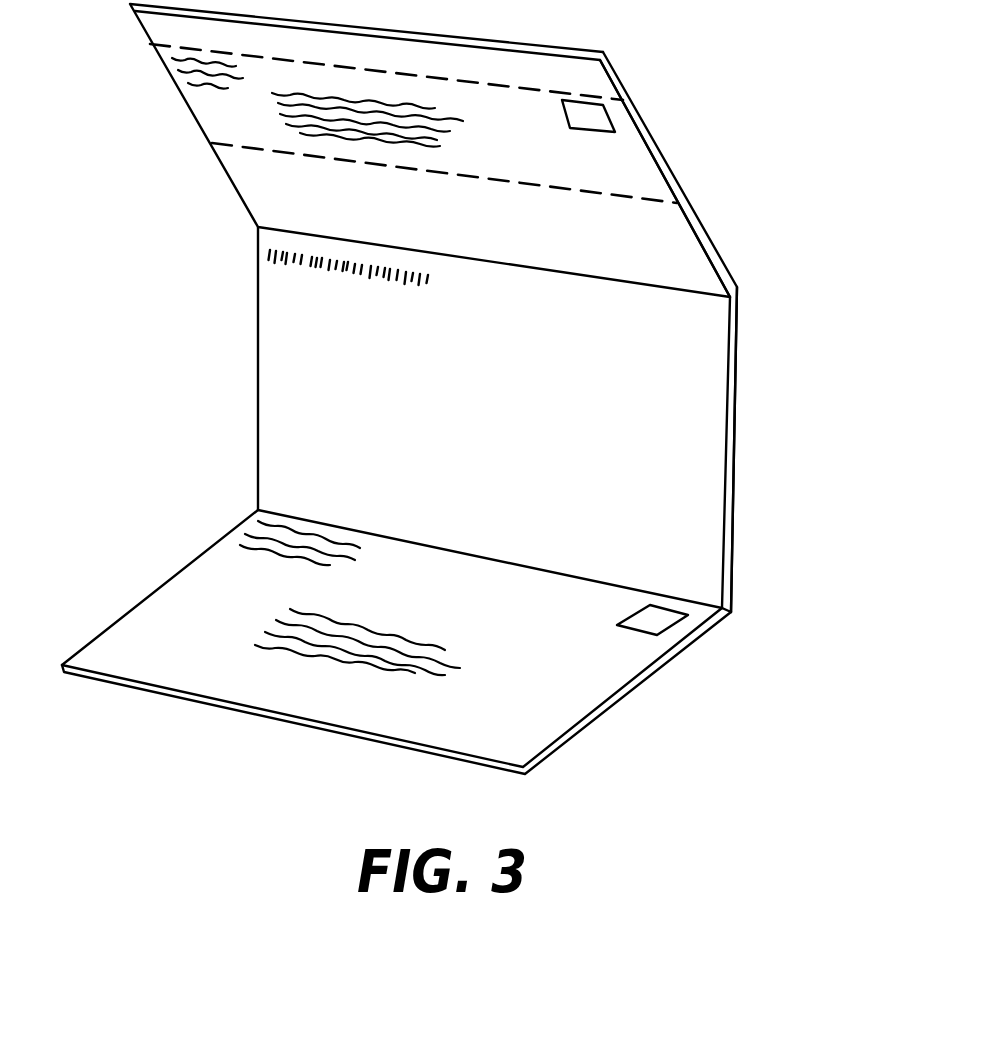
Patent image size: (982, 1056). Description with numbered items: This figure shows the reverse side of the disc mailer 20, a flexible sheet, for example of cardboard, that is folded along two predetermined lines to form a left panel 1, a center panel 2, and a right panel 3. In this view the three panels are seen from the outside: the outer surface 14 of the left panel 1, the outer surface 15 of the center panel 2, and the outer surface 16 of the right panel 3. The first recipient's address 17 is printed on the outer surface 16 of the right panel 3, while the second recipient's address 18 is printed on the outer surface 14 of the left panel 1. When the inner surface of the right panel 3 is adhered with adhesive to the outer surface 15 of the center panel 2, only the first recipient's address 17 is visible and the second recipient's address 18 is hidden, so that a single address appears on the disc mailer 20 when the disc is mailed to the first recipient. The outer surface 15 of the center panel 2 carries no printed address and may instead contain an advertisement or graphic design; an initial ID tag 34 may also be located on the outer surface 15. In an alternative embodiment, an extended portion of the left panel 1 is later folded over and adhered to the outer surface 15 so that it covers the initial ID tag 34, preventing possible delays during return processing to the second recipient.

The left panel 1 is at (607, 707).
The center panel 2 is at (730, 430).
The right panel 3 is at (700, 230).
The outer surface of the left panel 14 is at (392, 638).
The outer surface of the center panel 15 is at (494, 417).
The outer surface of the right panel 16 is at (430, 150).
The first recipient's address 17 is at (242, 108).
The second recipient's address 18 is at (236, 606).
The disc mailer 20 is at (196, 380).
The initial ID tag 34 is at (258, 251).